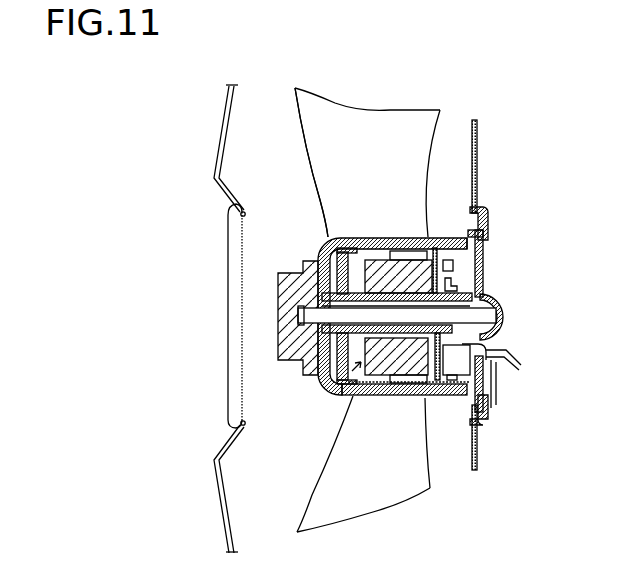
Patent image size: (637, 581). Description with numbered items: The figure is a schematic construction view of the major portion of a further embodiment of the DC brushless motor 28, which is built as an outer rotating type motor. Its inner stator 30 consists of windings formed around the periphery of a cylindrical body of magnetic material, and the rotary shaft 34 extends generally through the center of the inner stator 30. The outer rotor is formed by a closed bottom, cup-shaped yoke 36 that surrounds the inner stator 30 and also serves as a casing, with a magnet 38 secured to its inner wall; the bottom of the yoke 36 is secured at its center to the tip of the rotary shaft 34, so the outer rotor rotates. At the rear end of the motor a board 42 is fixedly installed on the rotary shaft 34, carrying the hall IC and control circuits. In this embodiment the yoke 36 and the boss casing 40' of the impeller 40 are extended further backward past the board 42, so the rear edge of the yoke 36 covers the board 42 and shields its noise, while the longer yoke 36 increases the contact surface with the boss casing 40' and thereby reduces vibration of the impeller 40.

The DC brushless motor 28 is at (328, 392).
The inner stator 30 is at (383, 262).
The rotary shaft 34 is at (473, 320).
The yoke 36 is at (320, 254).
The magnet 38 is at (385, 395).
The impeller 40 is at (367, 298).
The boss casing 40' is at (300, 162).
The board 42 is at (448, 237).